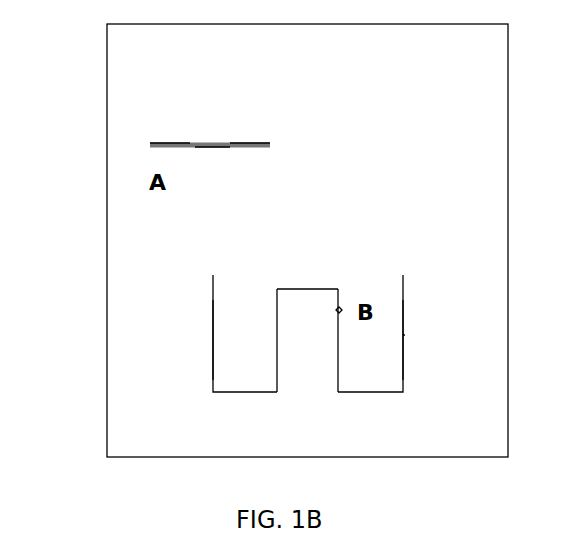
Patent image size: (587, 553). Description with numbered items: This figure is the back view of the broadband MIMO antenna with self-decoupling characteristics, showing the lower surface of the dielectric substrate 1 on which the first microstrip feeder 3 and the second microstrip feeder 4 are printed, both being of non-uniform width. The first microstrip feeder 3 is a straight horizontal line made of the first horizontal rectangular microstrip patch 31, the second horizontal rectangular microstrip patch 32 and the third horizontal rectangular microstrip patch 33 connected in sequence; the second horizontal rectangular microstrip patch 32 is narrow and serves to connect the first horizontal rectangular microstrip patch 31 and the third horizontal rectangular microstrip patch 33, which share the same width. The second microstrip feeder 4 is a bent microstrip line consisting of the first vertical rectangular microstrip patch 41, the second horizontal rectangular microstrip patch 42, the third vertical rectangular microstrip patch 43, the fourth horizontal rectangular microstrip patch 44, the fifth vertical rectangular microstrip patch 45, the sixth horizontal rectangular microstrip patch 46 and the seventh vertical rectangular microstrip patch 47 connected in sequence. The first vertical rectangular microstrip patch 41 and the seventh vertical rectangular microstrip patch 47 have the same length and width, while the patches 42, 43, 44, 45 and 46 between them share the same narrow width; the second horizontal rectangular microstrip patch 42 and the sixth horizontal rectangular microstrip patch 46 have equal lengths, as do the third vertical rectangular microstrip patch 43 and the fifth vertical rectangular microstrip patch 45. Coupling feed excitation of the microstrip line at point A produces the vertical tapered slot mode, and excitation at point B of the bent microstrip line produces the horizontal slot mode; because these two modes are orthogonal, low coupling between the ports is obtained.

The dielectric substrate 1 is at (442, 172).
The first microstrip feeder 3 is at (152, 145).
The first horizontal rectangular microstrip patch 31 is at (170, 136).
The second horizontal rectangular microstrip patch 32 is at (213, 155).
The third horizontal rectangular microstrip patch 33 is at (250, 134).
The second microstrip feeder 4 is at (408, 335).
The first vertical rectangular microstrip patch 41 is at (210, 340).
The second horizontal rectangular microstrip patch 42 is at (243, 395).
The third vertical rectangular microstrip patch 43 is at (275, 340).
The fourth horizontal rectangular microstrip patch 44 is at (305, 283).
The fifth vertical rectangular microstrip patch 45 is at (334, 341).
The sixth horizontal rectangular microstrip patch 46 is at (367, 395).
The seventh vertical rectangular microstrip patch 47 is at (400, 353).